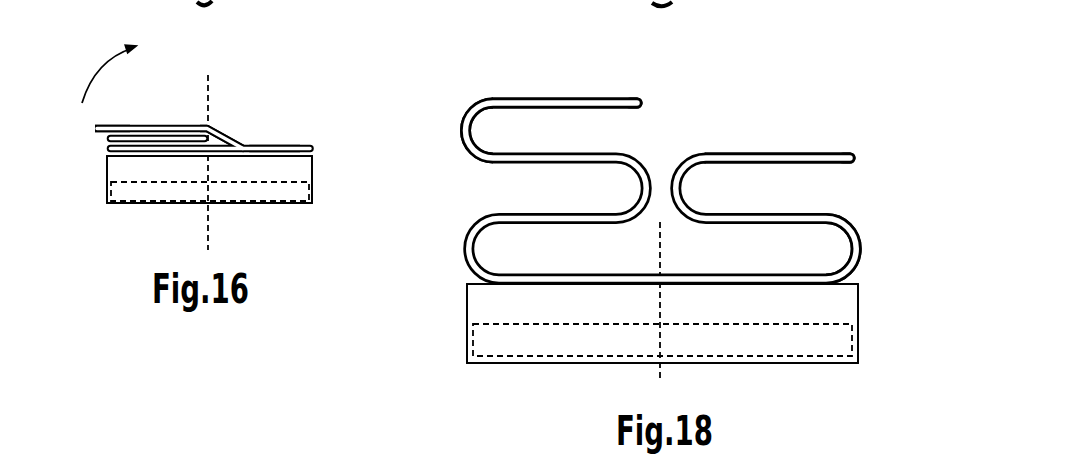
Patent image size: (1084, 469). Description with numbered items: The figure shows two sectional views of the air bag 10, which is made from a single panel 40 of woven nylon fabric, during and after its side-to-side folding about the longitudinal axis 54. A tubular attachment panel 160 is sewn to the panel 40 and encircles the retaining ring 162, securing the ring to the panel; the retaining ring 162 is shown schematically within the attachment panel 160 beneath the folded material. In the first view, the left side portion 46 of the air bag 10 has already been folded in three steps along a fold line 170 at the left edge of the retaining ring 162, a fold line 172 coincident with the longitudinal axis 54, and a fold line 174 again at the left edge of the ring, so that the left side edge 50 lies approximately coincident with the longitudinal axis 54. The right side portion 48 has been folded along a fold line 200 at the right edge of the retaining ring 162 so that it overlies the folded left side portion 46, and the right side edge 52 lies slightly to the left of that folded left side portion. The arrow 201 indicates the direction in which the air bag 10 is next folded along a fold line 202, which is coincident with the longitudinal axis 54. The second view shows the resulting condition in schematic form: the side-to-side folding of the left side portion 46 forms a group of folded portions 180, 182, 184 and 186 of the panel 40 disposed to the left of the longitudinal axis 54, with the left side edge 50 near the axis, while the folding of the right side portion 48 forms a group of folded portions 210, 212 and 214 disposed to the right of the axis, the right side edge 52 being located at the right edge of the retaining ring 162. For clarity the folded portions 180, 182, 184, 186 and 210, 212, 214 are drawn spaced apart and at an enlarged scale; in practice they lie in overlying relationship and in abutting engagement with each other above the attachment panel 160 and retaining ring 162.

In FIG. 16, the air bag 10 is at (278, 98).
In FIG. 18, the air bag 10 is at (731, 50).
In FIG. 18, the panel 40 is at (486, 92).
In FIG. 18, the left side portion 46 is at (526, 74).
In FIG. 18, the right side portion 48 is at (776, 93).
In FIG. 18, the left side edge 50 is at (642, 105).
In FIG. 16, the right side edge 52 is at (95, 128).
In FIG. 18, the right side edge 52 is at (856, 157).
In FIG. 16, the longitudinal axis 54 is at (215, 76).
In FIG. 18, the longitudinal axis 54 is at (662, 364).
In FIG. 16, the attachment panel 160 is at (312, 172).
In FIG. 18, the attachment panel 160 is at (467, 302).
In FIG. 16, the retaining ring 162 is at (137, 183).
In FIG. 18, the retaining ring 162 is at (497, 325).
In FIG. 18, the fold line 170 is at (467, 265).
In FIG. 18, the fold line 172 is at (658, 188).
In FIG. 18, the fold line 174 is at (462, 133).
In FIG. 18, the folded portion 180 is at (552, 275).
In FIG. 18, the folded portion 182 is at (553, 214).
In FIG. 18, the folded portion 184 is at (556, 161).
In FIG. 18, the folded portion 186 is at (545, 98).
In FIG. 16, the fold line 200 is at (313, 150).
In FIG. 18, the fold line 200 is at (861, 252).
In FIG. 16, the arrow 201 is at (84, 78).
In FIG. 16, the fold line 202 is at (207, 123).
In FIG. 18, the fold line 202 is at (683, 191).
In FIG. 18, the folded portion 210 is at (737, 281).
In FIG. 18, the folded portion 212 is at (793, 220).
In FIG. 18, the folded portion 214 is at (780, 155).